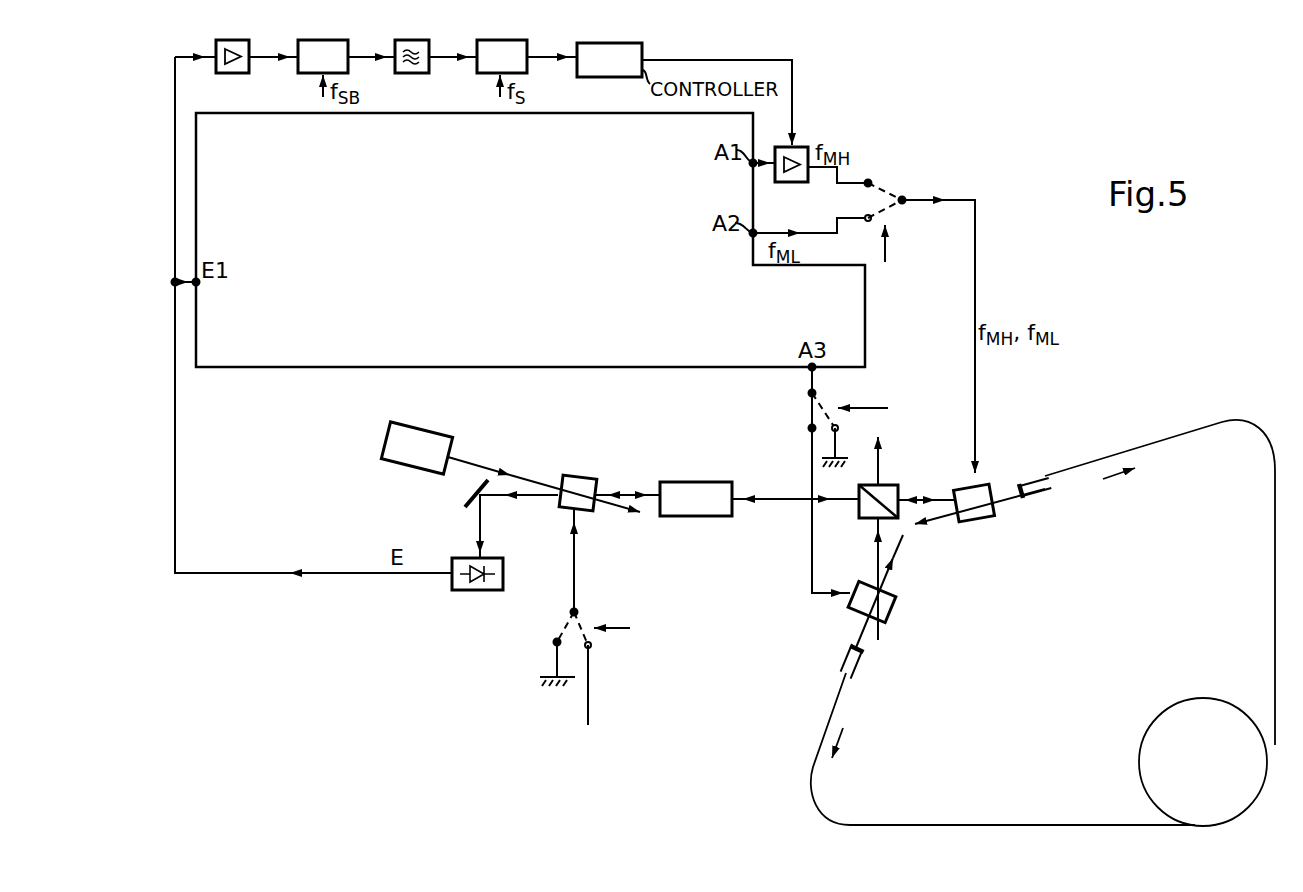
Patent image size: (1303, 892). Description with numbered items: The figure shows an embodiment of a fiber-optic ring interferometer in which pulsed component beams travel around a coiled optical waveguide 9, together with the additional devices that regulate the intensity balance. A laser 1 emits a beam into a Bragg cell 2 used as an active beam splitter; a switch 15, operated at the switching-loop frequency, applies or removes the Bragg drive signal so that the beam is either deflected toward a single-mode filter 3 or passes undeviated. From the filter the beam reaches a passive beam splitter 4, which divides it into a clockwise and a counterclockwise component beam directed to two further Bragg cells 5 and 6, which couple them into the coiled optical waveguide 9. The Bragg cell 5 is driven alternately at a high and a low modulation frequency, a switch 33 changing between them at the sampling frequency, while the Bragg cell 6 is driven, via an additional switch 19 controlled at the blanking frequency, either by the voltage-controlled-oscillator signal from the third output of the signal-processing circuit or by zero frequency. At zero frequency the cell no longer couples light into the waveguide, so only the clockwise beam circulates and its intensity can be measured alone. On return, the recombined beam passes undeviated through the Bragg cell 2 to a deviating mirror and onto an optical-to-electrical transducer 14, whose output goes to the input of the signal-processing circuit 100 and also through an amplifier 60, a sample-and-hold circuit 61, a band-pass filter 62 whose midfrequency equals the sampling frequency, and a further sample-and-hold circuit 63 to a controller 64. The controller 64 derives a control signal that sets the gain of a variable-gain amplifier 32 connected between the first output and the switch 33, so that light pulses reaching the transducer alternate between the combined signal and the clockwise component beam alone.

The laser 1 is at (419, 462).
The Bragg cell 2 is at (582, 477).
The single-mode filter 3 is at (698, 482).
The passive beam splitter 4 is at (885, 485).
The Bragg cell 5 is at (957, 488).
The Bragg cell 6 is at (892, 606).
The coiled optical waveguide 9 is at (1275, 493).
The optical-to-electrical transducer 14 is at (470, 591).
The switch 15 is at (566, 628).
The switch 19 is at (806, 412).
The variable-gain amplifier 32 is at (782, 147).
The switch 33 is at (864, 318).
The amplifier 60 is at (245, 73).
The sample-and-hold circuit 61 is at (313, 73).
The band-pass filter 62 is at (409, 73).
The sample-and-hold circuit 63 is at (489, 73).
The controller 64 is at (577, 72).
The signal-processing circuit 100 is at (268, 368).